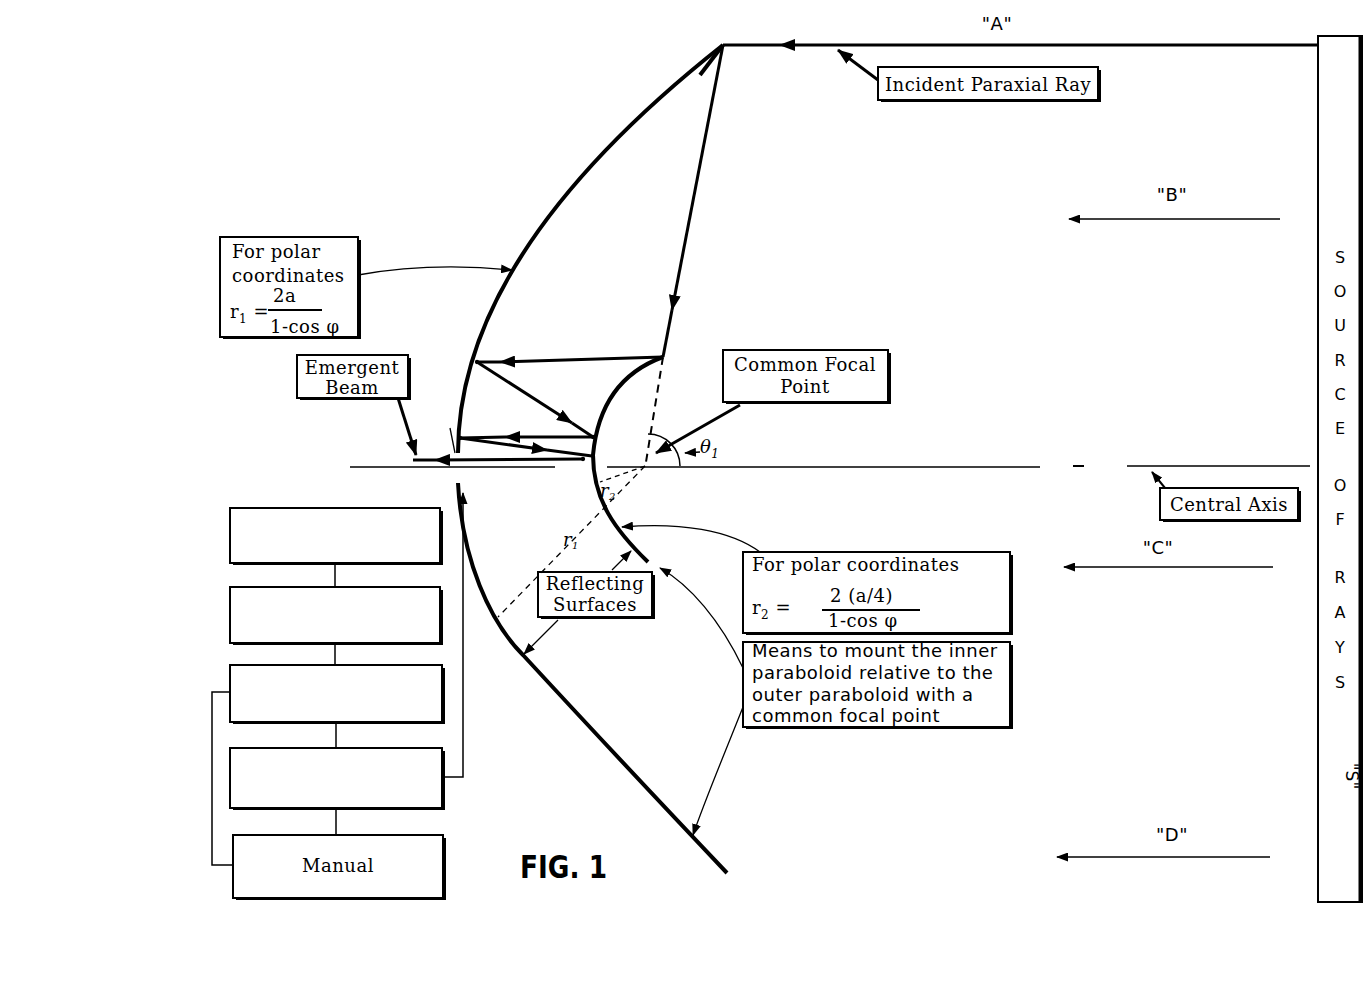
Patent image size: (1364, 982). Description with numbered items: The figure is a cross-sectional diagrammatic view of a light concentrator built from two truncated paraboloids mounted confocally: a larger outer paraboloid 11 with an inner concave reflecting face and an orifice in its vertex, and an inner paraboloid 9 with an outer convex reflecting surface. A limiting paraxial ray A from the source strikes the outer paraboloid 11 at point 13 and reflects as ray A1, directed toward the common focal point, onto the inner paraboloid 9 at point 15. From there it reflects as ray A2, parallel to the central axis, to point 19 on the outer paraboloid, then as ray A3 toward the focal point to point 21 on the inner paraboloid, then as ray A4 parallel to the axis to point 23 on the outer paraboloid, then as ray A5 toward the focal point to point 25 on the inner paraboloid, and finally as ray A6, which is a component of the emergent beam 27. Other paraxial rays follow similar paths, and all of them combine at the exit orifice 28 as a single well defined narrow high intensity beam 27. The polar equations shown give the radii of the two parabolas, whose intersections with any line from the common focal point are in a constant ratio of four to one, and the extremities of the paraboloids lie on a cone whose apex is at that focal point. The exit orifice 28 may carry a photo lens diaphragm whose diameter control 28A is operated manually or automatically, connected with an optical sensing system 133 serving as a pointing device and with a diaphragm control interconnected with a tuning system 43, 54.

The inner paraboloid 9 is at (631, 386).
The outer paraboloid 11 is at (568, 193).
The point 13 is at (722, 54).
The point 15 is at (661, 355).
The point 19 is at (478, 360).
The point 21 is at (592, 426).
The point 23 is at (480, 421).
The point 25 is at (582, 460).
The emergent beam 27 is at (455, 453).
The exit orifice 28 is at (459, 470).
The means for controlling diameter 28A is at (336, 615).
The tuning system 43 is at (337, 694).
The diaphragm control 54 is at (337, 694).
The optical sensing system 133 is at (337, 778).
The ray A1 is at (700, 173).
The ray A2 is at (547, 358).
The ray A3 is at (535, 396).
The ray A4 is at (557, 433).
The ray A5 is at (595, 448).
The ray A6 is at (505, 468).